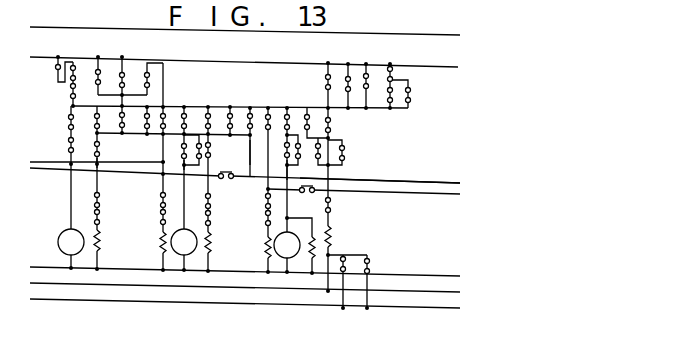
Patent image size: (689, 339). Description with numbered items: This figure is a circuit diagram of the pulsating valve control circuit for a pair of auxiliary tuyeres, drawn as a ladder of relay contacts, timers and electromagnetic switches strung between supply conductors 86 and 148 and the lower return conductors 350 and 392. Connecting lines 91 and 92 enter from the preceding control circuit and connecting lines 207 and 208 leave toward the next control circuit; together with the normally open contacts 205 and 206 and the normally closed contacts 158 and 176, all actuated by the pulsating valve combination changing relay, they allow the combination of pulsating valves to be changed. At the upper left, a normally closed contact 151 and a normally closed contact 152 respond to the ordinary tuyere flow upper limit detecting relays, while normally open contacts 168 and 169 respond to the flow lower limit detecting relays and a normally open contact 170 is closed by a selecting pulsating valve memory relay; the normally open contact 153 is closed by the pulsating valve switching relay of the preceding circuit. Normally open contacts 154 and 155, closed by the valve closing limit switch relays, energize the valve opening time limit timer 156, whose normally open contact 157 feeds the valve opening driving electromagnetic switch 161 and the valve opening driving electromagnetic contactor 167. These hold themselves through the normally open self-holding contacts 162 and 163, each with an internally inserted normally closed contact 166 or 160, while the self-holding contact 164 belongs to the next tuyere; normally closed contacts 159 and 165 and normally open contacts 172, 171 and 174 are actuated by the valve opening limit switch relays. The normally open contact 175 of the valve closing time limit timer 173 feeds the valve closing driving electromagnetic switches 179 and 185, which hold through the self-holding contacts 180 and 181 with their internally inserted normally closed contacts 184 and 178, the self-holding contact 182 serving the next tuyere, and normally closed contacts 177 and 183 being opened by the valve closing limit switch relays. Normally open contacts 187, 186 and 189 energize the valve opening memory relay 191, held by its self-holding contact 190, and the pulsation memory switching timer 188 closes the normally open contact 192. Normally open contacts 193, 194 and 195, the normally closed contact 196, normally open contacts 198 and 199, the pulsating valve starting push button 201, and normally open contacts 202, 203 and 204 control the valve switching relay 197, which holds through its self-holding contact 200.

The supply conductor 86 is at (63, 25).
The supply conductor 148 is at (418, 67).
The connecting line 91 is at (34, 160).
The connecting line 92 is at (34, 169).
The connecting line 207 is at (425, 185).
The connecting line 208 is at (392, 195).
The conductor 350 is at (35, 283).
The conductor 392 is at (35, 298).
The normally closed contact 151 is at (56, 70).
The normally closed contact 152 is at (86, 71).
The normally open contact 153 is at (70, 95).
The normally open contact 154 is at (68, 127).
The normally open contact 155 is at (68, 148).
The valve opening time limit timer 156 is at (71, 242).
The normally open contact 157 is at (86, 142).
The normally closed contact 158 is at (101, 154).
The normally closed contact 159 is at (111, 201).
The normally closed contact 160 is at (111, 219).
The valve opening driving electromagnetic switch 161 is at (110, 242).
The normally open self-holding contact 162 is at (108, 117).
The normally open self-holding contact 163 is at (123, 129).
The normally open self-holding contact 164 is at (151, 130).
The normally closed contact 165 is at (151, 202).
The normally closed contact 166 is at (151, 219).
The valve opening driving electromagnetic contactor 167 is at (151, 246).
The normally open contact 168 is at (109, 80).
The normally open contact 169 is at (130, 73).
The normally open contact 170 is at (150, 82).
The normally open contact 171 is at (168, 111).
The normally open contact 172 is at (183, 145).
The valve closing time limit timer 173 is at (184, 242).
The normally open contact 174 is at (172, 163).
The normally open contact 175 is at (194, 111).
The normally closed contact 176 is at (223, 152).
The normally closed contact 177 is at (221, 202).
The normally closed contact 178 is at (221, 223).
The valve closing driving electromagnetic switch 179 is at (221, 247).
The normally open self-holding contact 180 is at (220, 111).
The normally open self-holding contact 181 is at (241, 111).
The normally open self-holding contact 182 is at (259, 151).
The normally closed contact 183 is at (257, 200).
The normally closed contact 184 is at (257, 217).
The valve closing driving electromagnetic switch 185 is at (255, 249).
The normally open contact 186 is at (279, 112).
The normally open contact 187 is at (283, 157).
The pulsation memory switching timer 188 is at (287, 245).
The normally open contact 189 is at (299, 170).
The normally open self-holding contact 190 is at (299, 121).
The valve opening memory relay 191 is at (302, 254).
The normally open contact 192 is at (325, 83).
The normally open contact 193 is at (341, 125).
The normally open contact 194 is at (311, 147).
The normally open contact 195 is at (344, 155).
The normally closed contact 196 is at (341, 213).
The valve switching relay 197 is at (340, 238).
The normally open contact 198 is at (330, 266).
The normally open contact 199 is at (370, 268).
The normally open self-holding contact 200 is at (339, 91).
The pulsating valve starting push button 201 is at (357, 77).
The normally open contact 202 is at (392, 68).
The normally open contact 203 is at (380, 105).
The normally open contact 204 is at (408, 105).
The normally open contact 205 is at (232, 183).
The normally open contact 206 is at (308, 196).